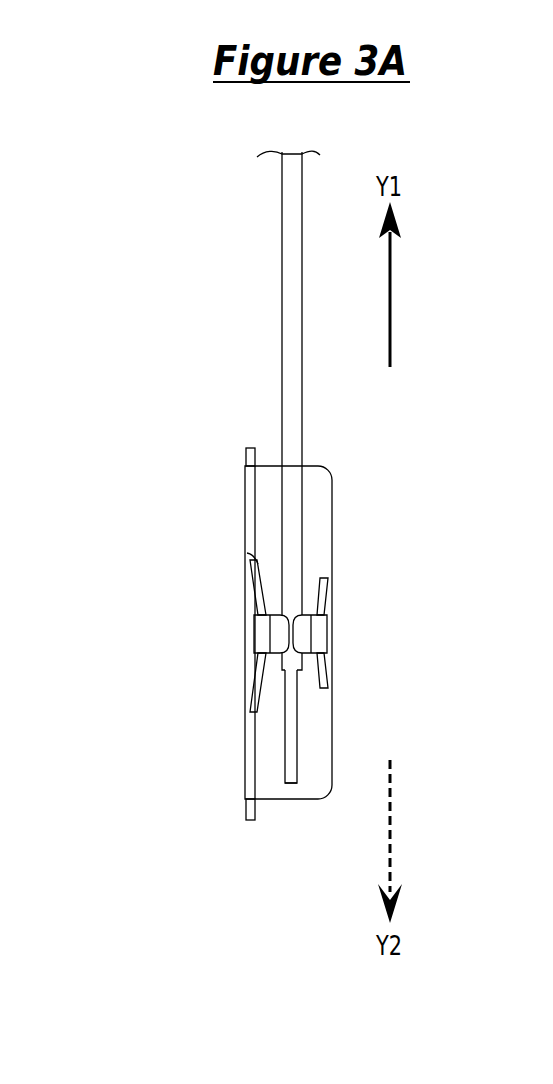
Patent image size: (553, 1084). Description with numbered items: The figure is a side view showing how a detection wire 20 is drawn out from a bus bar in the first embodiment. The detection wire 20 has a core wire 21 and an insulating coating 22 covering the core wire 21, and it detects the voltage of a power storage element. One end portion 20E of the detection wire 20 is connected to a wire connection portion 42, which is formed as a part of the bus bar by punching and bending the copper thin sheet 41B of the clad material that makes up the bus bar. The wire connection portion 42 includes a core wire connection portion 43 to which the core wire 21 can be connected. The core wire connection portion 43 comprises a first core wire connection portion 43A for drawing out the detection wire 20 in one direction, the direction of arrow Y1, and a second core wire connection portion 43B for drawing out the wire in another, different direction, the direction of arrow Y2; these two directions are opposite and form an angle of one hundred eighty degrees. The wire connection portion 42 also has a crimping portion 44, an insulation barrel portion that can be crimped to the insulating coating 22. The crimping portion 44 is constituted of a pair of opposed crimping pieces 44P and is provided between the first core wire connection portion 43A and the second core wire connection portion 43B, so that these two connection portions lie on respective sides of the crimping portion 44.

The detection wire 20 is at (243, 310).
The end portion of the detection wire 20E is at (216, 831).
The core wire 21 is at (289, 752).
The insulating coating 22 is at (288, 660).
The copper thin sheet 41B is at (249, 452).
The wire connection portion 42 is at (318, 466).
The core wire connection portion 43 is at (400, 540).
The first core wire connection portion 43A is at (316, 723).
The second core wire connection portion 43B is at (318, 550).
The crimping portion 44 is at (282, 639).
The crimping pieces 44P is at (270, 634).